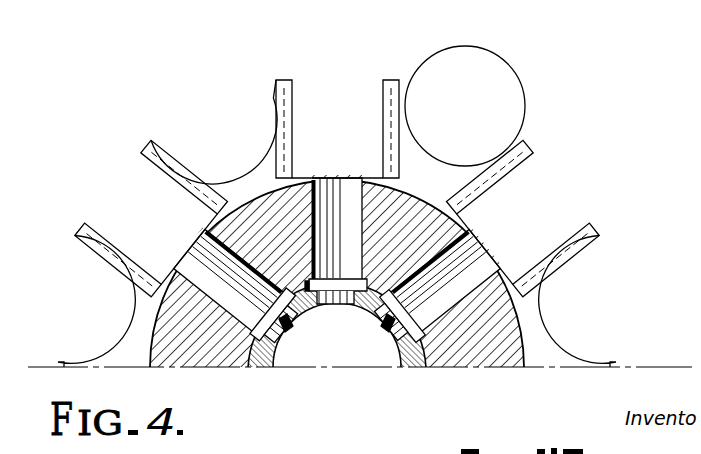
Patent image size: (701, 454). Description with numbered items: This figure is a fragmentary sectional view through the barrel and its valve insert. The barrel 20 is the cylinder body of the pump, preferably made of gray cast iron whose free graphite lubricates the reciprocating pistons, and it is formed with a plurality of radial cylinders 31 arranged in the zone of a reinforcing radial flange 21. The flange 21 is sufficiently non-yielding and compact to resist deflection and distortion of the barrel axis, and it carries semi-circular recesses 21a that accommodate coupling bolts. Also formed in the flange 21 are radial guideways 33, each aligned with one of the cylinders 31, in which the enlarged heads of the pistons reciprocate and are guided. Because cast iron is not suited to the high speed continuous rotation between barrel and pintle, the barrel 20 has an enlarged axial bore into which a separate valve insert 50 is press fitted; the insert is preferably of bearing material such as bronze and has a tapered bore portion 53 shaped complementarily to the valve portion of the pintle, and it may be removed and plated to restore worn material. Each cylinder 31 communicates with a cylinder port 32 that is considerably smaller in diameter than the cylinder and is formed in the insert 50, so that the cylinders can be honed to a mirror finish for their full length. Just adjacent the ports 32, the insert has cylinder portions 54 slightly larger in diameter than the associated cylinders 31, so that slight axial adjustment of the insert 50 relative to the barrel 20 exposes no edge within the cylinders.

The barrel 20 is at (438, 361).
The reinforcing radial flange 21 is at (398, 157).
The semi-circular recesses 21a is at (406, 113).
The radial cylinders 31 is at (358, 167).
The cylinder port 32 is at (278, 333).
The radial guideways 33 is at (296, 132).
The valve insert 50 is at (402, 352).
The tapered bore portion 53 is at (362, 310).
The cylinder portions 54 is at (260, 333).